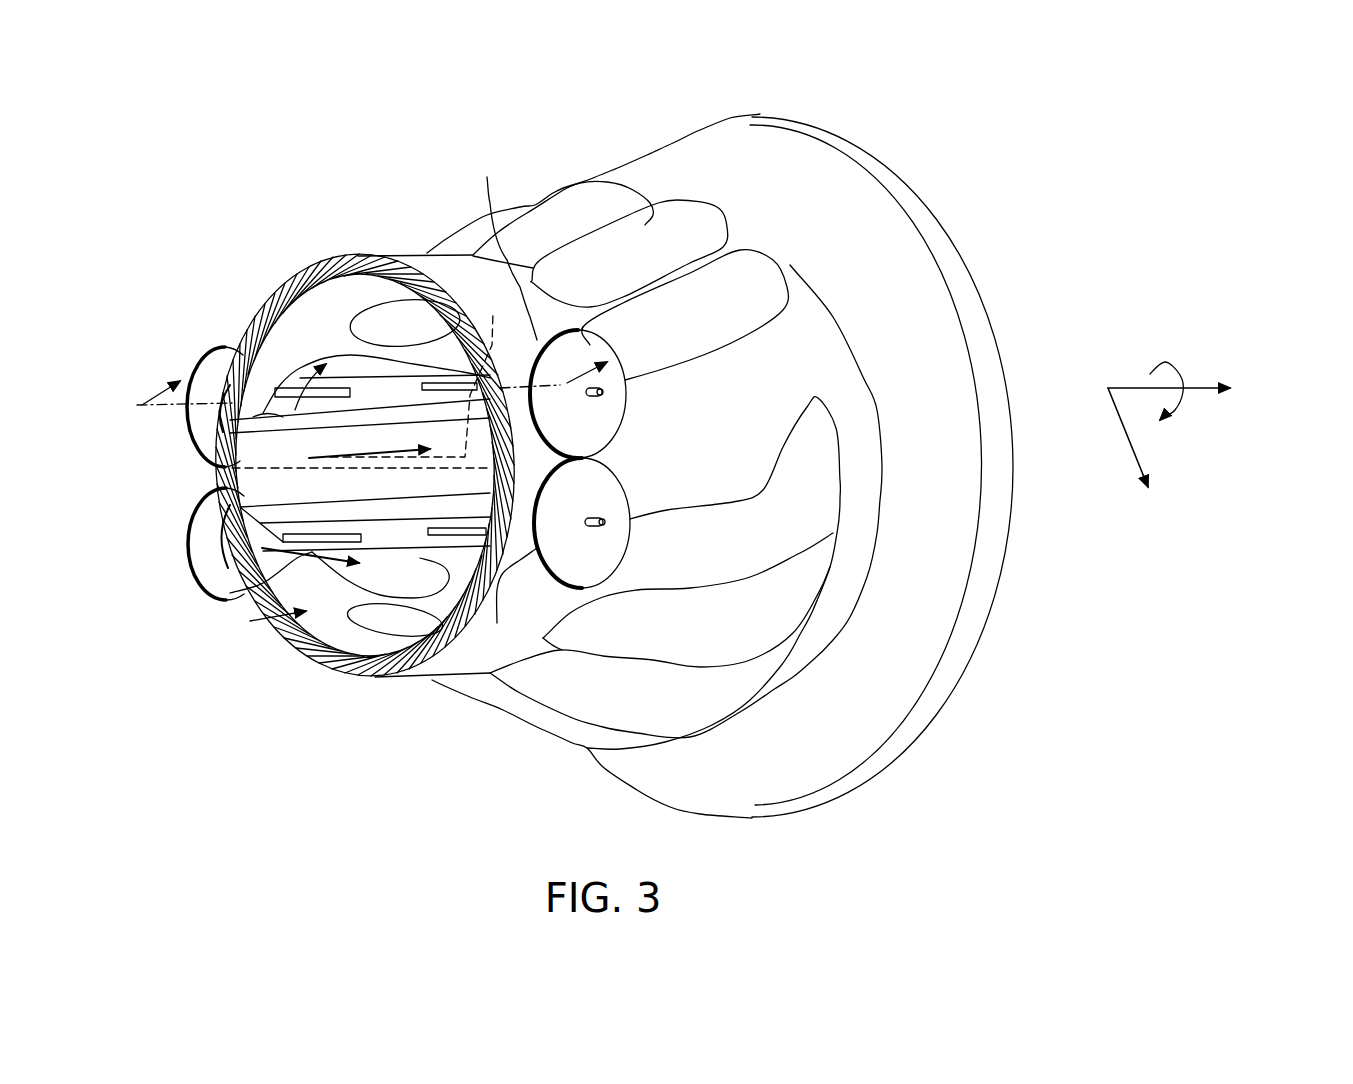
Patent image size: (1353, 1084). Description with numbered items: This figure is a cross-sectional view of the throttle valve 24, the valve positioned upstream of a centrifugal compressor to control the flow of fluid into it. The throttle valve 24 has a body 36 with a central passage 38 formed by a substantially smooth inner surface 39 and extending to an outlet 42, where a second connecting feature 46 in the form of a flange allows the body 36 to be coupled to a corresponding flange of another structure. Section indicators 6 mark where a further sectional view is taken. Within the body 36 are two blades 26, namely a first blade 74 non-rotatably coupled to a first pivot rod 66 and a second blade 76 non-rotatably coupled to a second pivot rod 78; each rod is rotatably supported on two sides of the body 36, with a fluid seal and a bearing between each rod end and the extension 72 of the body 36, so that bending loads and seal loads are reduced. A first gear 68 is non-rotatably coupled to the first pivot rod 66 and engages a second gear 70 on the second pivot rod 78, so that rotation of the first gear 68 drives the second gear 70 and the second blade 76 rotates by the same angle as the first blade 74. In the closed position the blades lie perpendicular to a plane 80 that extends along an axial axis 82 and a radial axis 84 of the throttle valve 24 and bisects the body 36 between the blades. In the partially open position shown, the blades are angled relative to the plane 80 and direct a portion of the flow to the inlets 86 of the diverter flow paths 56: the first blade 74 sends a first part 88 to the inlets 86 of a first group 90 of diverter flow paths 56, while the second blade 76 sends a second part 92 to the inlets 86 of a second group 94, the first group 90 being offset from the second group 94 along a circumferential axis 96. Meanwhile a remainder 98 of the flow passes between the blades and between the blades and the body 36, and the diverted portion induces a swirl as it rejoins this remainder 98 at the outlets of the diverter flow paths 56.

The section line 6- 6 is at (371, 378).
The throttle valve 24 is at (917, 467).
The blades 26 is at (292, 338).
The body 36 is at (820, 340).
The central passage 38 is at (262, 614).
The inner surface 39 is at (252, 348).
The outlet 42 is at (1040, 310).
The second connecting feature 46 is at (985, 635).
The diverter flow paths 56 is at (672, 215).
The first pivot rod 66 is at (603, 398).
The first gear 68 is at (590, 345).
The second gear 70 is at (582, 576).
The extension 72 is at (504, 399).
The first blade 74 is at (383, 383).
The second blade 76 is at (400, 513).
The second pivot rod 78 is at (603, 535).
The plane 80 is at (419, 369).
The axial axis 82 is at (1133, 387).
The radial axis 84 is at (1118, 415).
The inlets 86 is at (388, 306).
The first part 88 is at (228, 445).
The first group 90 is at (447, 200).
The second part 92 is at (240, 589).
The second group 94 is at (547, 760).
The circumferential axis 96 is at (1180, 398).
The remainder 98 is at (367, 453).